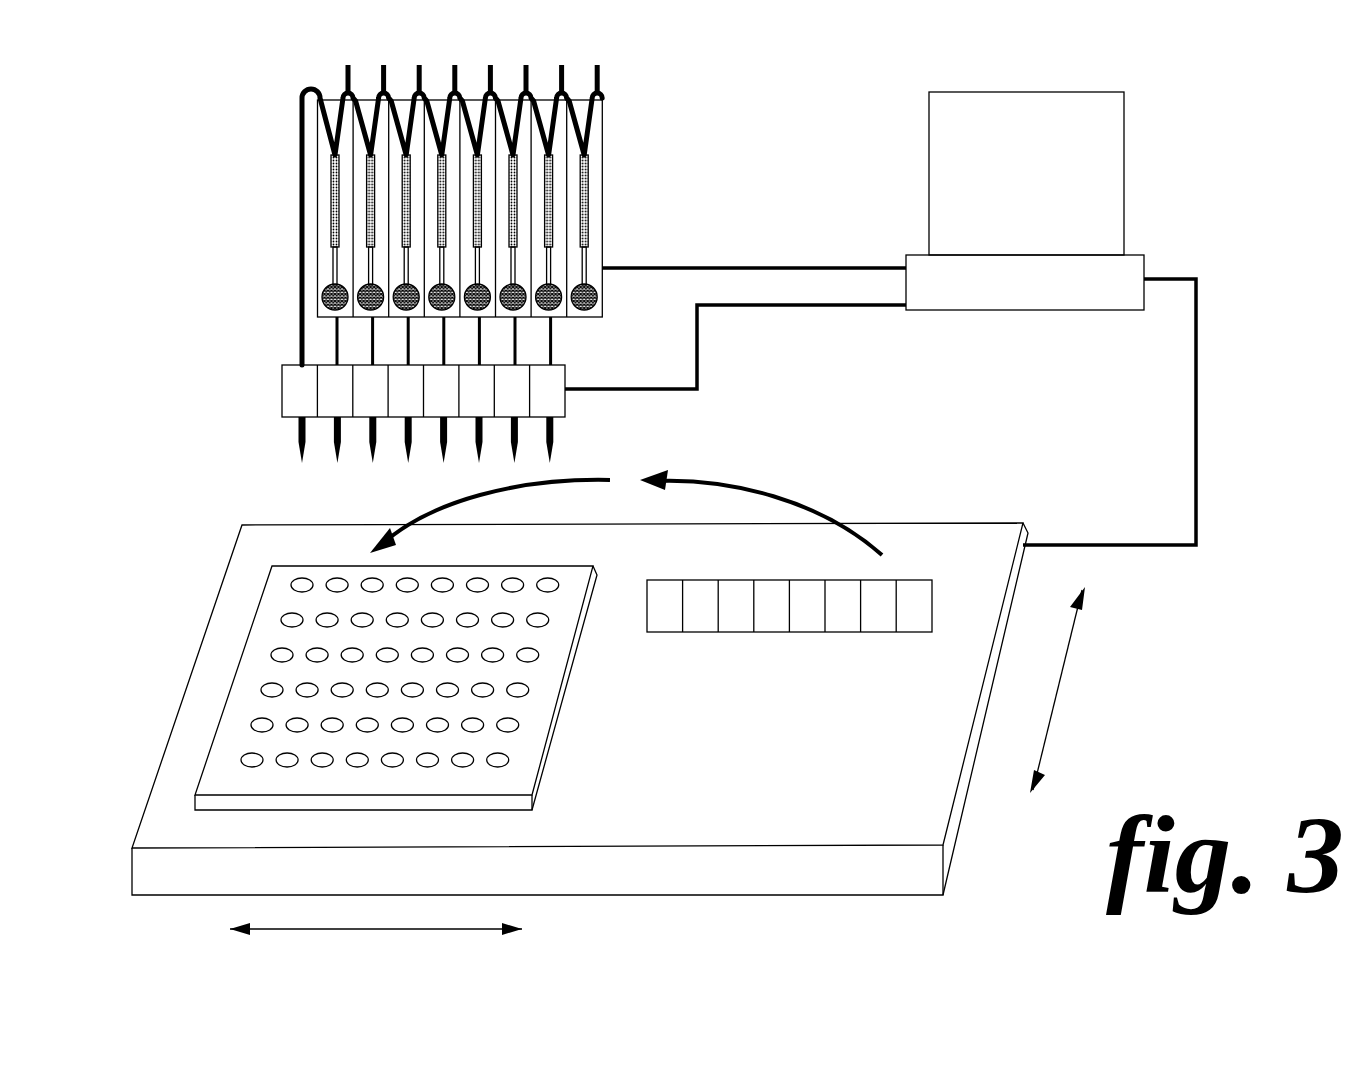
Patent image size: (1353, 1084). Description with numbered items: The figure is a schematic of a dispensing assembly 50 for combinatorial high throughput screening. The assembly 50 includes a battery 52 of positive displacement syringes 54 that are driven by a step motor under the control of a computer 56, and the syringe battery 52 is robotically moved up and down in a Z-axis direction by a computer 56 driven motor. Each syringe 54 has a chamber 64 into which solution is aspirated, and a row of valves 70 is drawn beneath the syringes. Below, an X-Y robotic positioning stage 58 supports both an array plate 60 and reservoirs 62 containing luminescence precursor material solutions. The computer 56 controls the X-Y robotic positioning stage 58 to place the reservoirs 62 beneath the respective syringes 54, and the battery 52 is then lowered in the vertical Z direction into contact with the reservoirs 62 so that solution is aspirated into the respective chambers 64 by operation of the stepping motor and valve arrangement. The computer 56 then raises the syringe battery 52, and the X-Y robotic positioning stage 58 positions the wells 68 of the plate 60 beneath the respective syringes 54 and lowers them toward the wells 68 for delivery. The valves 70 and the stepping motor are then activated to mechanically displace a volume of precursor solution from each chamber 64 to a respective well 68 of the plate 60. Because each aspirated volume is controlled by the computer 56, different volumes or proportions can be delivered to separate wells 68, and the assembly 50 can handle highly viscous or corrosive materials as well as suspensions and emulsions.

The dispensing assembly 50 is at (770, 120).
The battery of positive displacement syringes 52 is at (603, 163).
The positive displacement syringe 54 is at (333, 196).
The computer 56 is at (1124, 161).
The X-Y robotic positioning stage 58 is at (968, 777).
The array plate 60 is at (565, 692).
The reservoirs 62 is at (735, 632).
The chamber 64 is at (325, 287).
The wells 68 is at (290, 585).
The valves 70 is at (282, 390).